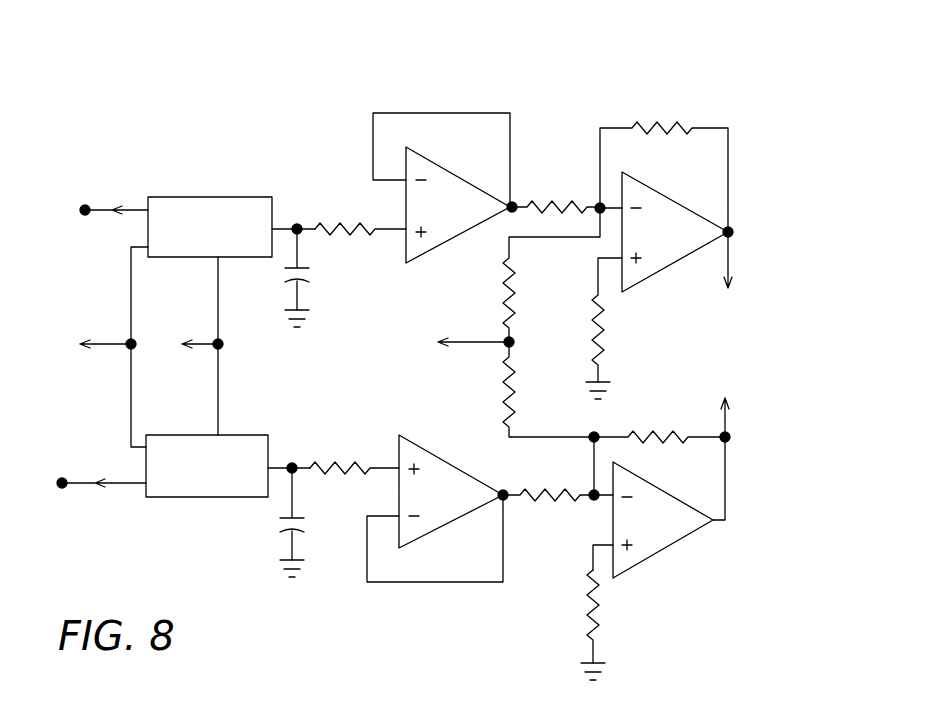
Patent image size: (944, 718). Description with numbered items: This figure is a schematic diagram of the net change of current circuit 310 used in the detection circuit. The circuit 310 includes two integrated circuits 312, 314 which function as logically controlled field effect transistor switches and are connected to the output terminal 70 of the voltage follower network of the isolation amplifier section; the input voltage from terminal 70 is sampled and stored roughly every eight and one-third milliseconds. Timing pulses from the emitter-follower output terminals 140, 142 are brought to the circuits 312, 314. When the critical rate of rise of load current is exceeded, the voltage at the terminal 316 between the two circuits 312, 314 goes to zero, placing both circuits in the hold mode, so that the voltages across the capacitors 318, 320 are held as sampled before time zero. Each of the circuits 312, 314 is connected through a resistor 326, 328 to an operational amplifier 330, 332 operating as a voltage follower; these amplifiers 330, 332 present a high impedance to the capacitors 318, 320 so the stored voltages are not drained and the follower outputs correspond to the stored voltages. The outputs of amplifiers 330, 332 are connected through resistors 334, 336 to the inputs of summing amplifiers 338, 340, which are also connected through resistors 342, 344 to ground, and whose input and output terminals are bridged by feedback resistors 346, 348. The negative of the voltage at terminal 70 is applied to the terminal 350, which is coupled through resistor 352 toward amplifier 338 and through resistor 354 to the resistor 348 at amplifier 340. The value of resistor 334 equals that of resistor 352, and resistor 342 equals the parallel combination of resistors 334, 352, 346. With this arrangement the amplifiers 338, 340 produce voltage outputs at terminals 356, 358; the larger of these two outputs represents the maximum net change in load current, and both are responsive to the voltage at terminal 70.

The net change of current circuit 310 is at (182, 103).
The integrated circuit 312 is at (207, 197).
The integrated circuit 314 is at (176, 497).
The output terminal 140 is at (85, 204).
The output terminal 142 is at (62, 477).
The terminal 316 is at (134, 340).
The output terminal 70 is at (221, 341).
The capacitor 318 is at (305, 278).
The capacitor 320 is at (300, 522).
The resistor 326 is at (335, 224).
The resistor 328 is at (333, 462).
The operational amplifier 330 is at (455, 245).
The operational amplifier 332 is at (436, 527).
The resistor 334 is at (553, 204).
The resistor 336 is at (546, 500).
The summing amplifier 338 is at (676, 195).
The summing amplifier 340 is at (660, 500).
The resistor 342 is at (600, 303).
The resistor 344 is at (592, 594).
The resistor 346 is at (660, 125).
The resistor 348 is at (658, 432).
The terminal 350 is at (513, 346).
The resistor 352 is at (506, 288).
The resistor 354 is at (506, 398).
The terminal 356 is at (735, 232).
The terminal 358 is at (732, 437).